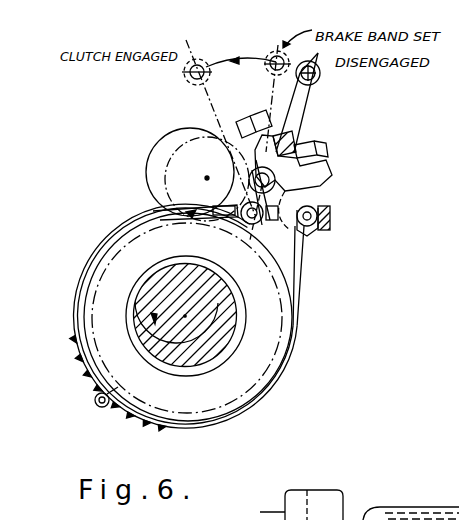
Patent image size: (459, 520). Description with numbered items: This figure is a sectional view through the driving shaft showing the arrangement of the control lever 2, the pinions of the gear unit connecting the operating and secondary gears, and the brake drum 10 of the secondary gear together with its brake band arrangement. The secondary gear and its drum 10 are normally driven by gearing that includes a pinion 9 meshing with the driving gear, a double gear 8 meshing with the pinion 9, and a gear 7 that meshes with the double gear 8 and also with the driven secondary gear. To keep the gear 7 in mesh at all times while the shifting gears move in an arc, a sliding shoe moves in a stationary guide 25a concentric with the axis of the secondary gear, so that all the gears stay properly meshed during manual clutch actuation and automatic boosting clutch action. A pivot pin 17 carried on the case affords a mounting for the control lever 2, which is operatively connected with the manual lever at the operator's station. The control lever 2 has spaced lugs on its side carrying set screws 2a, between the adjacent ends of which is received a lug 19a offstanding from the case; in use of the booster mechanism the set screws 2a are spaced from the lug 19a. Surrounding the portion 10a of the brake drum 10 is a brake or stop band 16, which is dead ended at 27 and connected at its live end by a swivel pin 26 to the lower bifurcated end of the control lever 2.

The control lever 2 is at (303, 98).
The set screws 2a is at (238, 121).
The gear 7 is at (185, 167).
The double gear 8 is at (305, 180).
The pinion 9 is at (273, 230).
The brake drum 10 is at (262, 291).
The portion of the brake drum 10a is at (281, 357).
The brake or stop band 16 is at (260, 397).
The pivot pin 17 is at (283, 193).
The lug 19a is at (284, 144).
The swivel pin 26 is at (251, 225).
The dead end of the brake band 27 is at (312, 214).
The stationary guide 25a is at (330, 512).